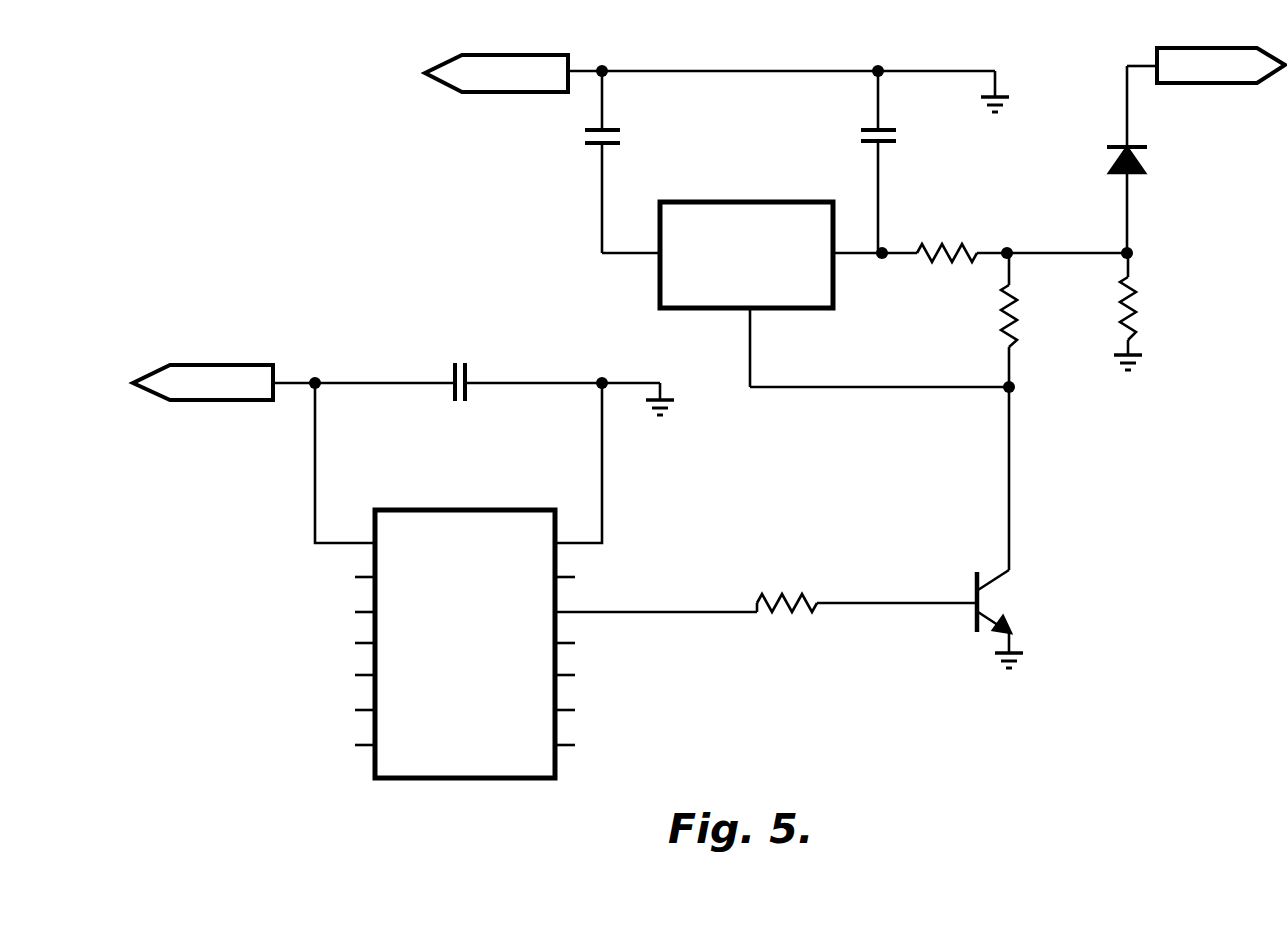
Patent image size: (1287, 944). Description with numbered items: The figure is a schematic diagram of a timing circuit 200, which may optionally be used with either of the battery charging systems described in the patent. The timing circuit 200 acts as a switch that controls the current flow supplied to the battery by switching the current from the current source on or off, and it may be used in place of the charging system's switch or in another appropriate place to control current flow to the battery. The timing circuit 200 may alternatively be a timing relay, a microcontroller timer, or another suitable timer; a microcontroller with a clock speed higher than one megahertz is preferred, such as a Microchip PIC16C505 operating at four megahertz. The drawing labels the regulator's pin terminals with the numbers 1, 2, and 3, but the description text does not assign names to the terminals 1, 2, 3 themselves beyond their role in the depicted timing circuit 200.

The timing circuit 200 is at (390, 176).
The U2 COM pin 1 is at (762, 347).
The U2 OUT pin 2 is at (875, 238).
The U2 IN pin 3 is at (631, 242).